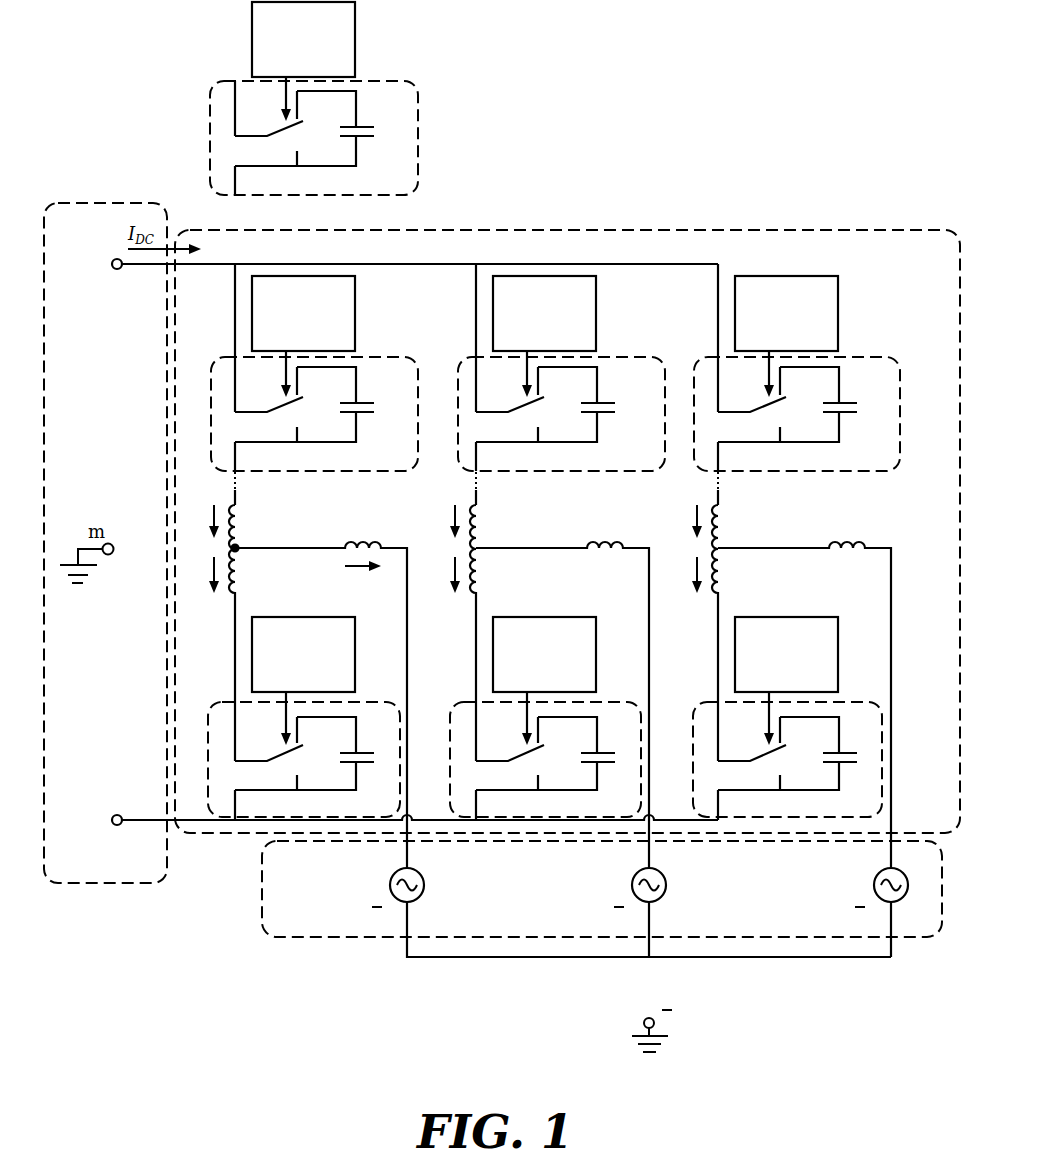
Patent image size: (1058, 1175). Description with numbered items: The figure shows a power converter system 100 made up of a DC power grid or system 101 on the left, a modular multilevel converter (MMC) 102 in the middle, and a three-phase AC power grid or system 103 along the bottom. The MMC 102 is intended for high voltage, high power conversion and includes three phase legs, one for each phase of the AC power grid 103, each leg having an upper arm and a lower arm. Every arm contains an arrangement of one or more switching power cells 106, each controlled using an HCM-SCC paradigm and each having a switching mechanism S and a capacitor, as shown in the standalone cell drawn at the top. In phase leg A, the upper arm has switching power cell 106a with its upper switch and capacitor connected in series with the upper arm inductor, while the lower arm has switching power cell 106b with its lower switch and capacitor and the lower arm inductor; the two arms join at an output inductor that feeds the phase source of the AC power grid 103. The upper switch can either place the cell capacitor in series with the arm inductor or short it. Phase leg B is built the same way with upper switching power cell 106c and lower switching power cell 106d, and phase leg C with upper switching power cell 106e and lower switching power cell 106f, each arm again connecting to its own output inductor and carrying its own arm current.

The power converter system 100 is at (871, 190).
The DC power grid or system 101 is at (117, 884).
The modular multilevel converter (MMC) 102 is at (180, 831).
The AC power grid or system 103 is at (360, 938).
The switching power cell 106 is at (392, 82).
The switching power cell (upper arm, phase leg A) 106a is at (389, 358).
The switching power cell (lower arm, phase leg A) 106b is at (363, 701).
The switching power cell (upper arm, phase leg B) 106c is at (640, 358).
The switching power cell (lower arm, phase leg B) 106d is at (605, 701).
The switching power cell (upper arm, phase leg C) 106e is at (877, 358).
The switching power cell (lower arm, phase leg C) 106f is at (848, 701).